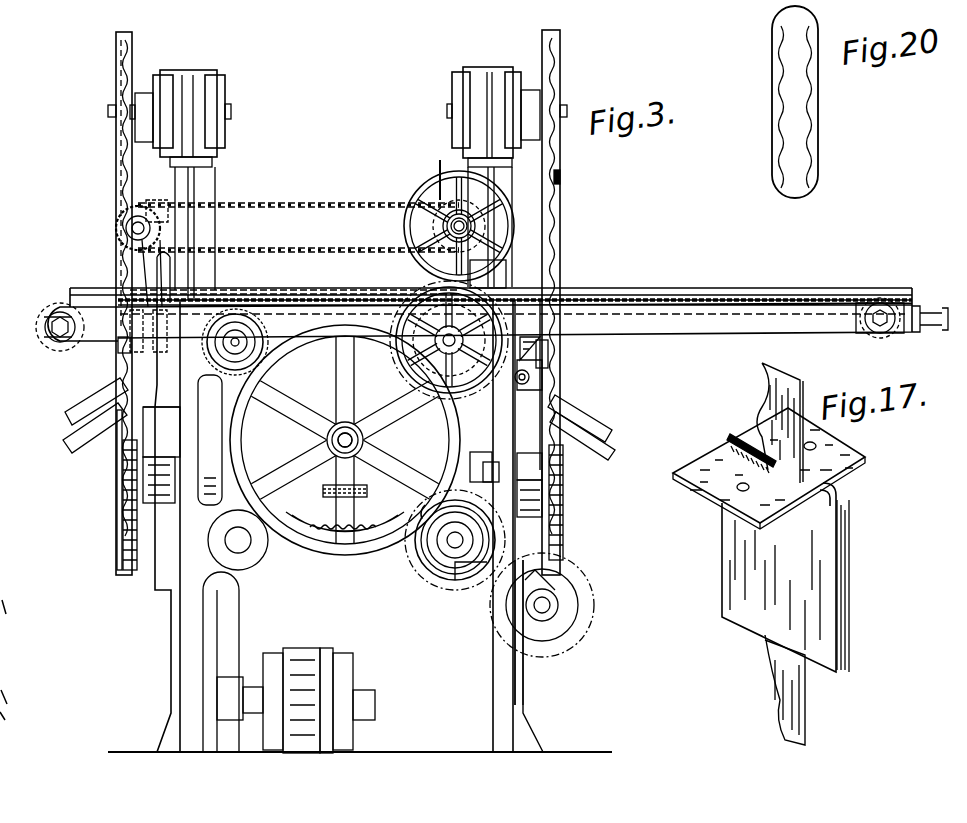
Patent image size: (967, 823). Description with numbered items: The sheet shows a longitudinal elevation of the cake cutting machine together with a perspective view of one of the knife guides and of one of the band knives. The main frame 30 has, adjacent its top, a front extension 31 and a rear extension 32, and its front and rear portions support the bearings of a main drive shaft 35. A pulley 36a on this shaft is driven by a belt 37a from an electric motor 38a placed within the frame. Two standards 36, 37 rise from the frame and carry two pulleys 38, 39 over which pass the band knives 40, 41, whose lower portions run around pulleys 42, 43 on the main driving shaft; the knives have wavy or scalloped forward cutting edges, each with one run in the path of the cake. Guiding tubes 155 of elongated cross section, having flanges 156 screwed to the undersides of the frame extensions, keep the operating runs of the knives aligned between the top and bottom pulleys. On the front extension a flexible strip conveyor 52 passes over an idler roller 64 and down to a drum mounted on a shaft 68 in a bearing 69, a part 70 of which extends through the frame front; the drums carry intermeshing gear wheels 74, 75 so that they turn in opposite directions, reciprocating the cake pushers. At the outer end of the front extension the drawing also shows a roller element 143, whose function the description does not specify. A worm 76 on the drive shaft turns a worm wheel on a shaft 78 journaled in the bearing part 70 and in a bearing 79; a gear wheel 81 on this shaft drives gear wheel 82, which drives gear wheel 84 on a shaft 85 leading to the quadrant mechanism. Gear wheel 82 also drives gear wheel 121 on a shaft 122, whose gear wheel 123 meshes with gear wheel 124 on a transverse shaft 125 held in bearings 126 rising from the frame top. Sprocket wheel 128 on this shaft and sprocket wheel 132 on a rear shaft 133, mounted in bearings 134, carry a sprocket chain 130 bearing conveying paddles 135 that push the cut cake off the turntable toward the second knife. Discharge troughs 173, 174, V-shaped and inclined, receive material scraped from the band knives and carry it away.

In FIG. 3, the main frame 30 is at (493, 678).
In FIG. 3, the front extension 31 is at (704, 340).
In FIG. 3, the rear extension 32 is at (95, 334).
In FIG. 3, the main drive shaft 35 is at (335, 498).
In FIG. 3, the standard 36 is at (500, 256).
In FIG. 3, the pulley 36a is at (222, 428).
In FIG. 3, the standard 37 is at (216, 195).
In FIG. 3, the belt 37a is at (240, 610).
In FIG. 3, the pulley 38 is at (560, 176).
In FIG. 3, the electric motor 38a is at (315, 650).
In FIG. 3, the pulley 39 is at (122, 153).
In FIG. 3, the band knife 40 is at (560, 240).
In FIG. 20, the band knife 40 is at (815, 134).
In FIG. 3, the band knife 41 is at (116, 205).
In FIG. 17, the band knife 41 is at (770, 385).
In FIG. 3, the pulley 42 is at (563, 503).
In FIG. 3, the pulley 43 is at (122, 514).
In FIG. 3, the strip conveyor 52 is at (680, 295).
In FIG. 3, the idler roller 64 is at (530, 370).
In FIG. 3, the shaft 68 is at (560, 603).
In FIG. 3, the bearing 69 is at (524, 662).
In FIG. 3, the bearing part 70 is at (545, 598).
In FIG. 3, the gear wheel 74 is at (582, 585).
In FIG. 3, the gear wheel 75 is at (430, 552).
In FIG. 3, the worm 76 is at (476, 475).
In FIG. 3, the shaft 78 is at (442, 555).
In FIG. 3, the bearing 79 is at (472, 582).
In FIG. 3, the gear wheel 81 is at (430, 506).
In FIG. 3, the gear wheel 82 is at (330, 330).
In FIG. 3, the gear wheel 84 is at (208, 328).
In FIG. 3, the shaft 85 is at (355, 434).
In FIG. 3, the gear wheel 121 is at (400, 345).
In FIG. 3, the shaft 122 is at (450, 352).
In FIG. 3, the gear wheel 123 is at (410, 302).
In FIG. 3, the gear wheel 124 is at (416, 196).
In FIG. 3, the shaft 125 is at (470, 224).
In FIG. 3, the bearing 126 is at (506, 272).
In FIG. 3, the sprocket wheel 128 is at (446, 220).
In FIG. 3, the sprocket chain 130 is at (336, 206).
In FIG. 3, the sprocket wheel 132 is at (155, 210).
In FIG. 3, the shaft 133 is at (133, 232).
In FIG. 3, the bearing 134 is at (138, 265).
In FIG. 3, the conveying paddle 135 is at (170, 270).
In FIG. 3, the pulley 143 is at (45, 346).
In FIG. 3, the guiding tube 155 is at (120, 352).
In FIG. 17, the guiding tube 155 is at (850, 530).
In FIG. 17, the flange 156 is at (866, 460).
In FIG. 3, the discharge trough 173 is at (72, 450).
In FIG. 3, the discharge trough 174 is at (70, 414).